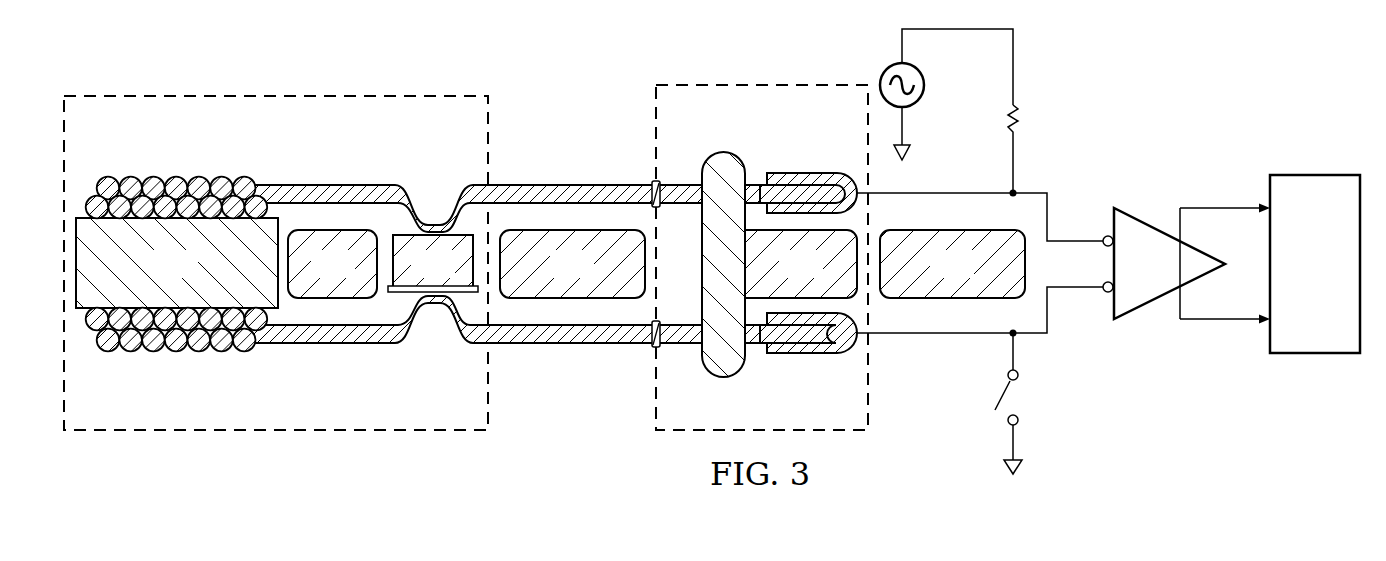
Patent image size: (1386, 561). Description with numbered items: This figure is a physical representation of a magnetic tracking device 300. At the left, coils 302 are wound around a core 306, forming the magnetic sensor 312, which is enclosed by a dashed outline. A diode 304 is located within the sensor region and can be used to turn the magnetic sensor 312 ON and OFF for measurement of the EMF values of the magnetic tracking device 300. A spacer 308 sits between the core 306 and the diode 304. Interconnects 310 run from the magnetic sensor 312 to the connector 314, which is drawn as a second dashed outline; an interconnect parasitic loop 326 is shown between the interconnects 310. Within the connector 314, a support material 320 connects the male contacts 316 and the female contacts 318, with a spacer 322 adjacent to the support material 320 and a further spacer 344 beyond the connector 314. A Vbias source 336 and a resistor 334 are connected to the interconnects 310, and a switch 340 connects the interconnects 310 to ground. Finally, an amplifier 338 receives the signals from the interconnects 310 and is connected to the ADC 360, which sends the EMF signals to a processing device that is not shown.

The magnetic tracking device 300 is at (1300, 80).
The coils 302 is at (169, 173).
The diode 304 is at (452, 277).
The core 306 is at (196, 277).
The spacer 308 is at (352, 277).
The interconnects 310 is at (328, 183).
The magnetic sensor 312 is at (234, 90).
The connector 314 is at (776, 78).
The male contacts 316 is at (682, 182).
The female contacts 318 is at (810, 172).
The support material 320 is at (722, 152).
The spacer 322 is at (821, 277).
The interconnect parasitic loop 326 is at (592, 277).
The resistor 334 is at (1021, 116).
The Vbias source 336 is at (925, 82).
The amplifier 338 is at (1170, 281).
The switch 340 is at (1000, 392).
The spacer 344 is at (972, 277).
The ADC 360 is at (1335, 305).